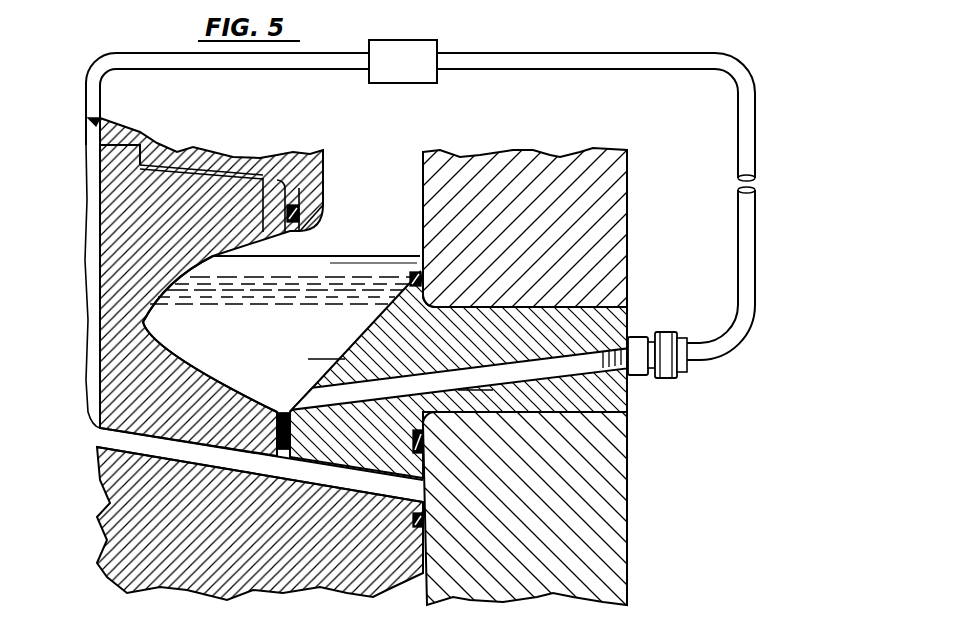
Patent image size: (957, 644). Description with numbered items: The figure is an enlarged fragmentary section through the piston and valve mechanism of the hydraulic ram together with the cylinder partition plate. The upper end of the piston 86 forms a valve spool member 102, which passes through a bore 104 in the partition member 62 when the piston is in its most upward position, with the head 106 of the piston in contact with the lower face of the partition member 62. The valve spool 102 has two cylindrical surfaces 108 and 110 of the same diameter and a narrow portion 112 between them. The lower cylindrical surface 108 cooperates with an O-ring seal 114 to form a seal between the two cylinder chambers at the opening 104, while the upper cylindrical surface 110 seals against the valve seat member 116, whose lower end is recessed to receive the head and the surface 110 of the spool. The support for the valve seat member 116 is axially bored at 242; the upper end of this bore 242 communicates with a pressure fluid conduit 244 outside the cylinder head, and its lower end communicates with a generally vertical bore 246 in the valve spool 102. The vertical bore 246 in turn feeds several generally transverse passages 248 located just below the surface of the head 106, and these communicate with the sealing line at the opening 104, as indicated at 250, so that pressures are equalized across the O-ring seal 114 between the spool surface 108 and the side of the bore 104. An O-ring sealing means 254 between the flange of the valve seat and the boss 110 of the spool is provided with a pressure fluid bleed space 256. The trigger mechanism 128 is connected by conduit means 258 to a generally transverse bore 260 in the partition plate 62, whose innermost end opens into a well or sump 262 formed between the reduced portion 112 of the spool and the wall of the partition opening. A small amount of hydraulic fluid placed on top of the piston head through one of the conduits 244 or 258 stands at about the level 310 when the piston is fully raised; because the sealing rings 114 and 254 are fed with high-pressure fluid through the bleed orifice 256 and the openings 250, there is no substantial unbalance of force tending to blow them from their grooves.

The partition member 62 is at (628, 407).
The piston 86 is at (347, 590).
The valve spool member 102 is at (113, 212).
The bore 104 is at (287, 412).
The head 106 is at (355, 467).
The cylindrical surface 108 is at (280, 445).
The cylindrical surface 110 is at (263, 180).
The narrow portion 112 is at (140, 322).
The O-ring seal 114 is at (278, 418).
The valve seat member 116 is at (301, 153).
The trigger mechanism 128 is at (436, 41).
The bore 242 is at (90, 117).
The pressure fluid conduit 244 is at (184, 71).
The vertical bore 246 is at (92, 281).
The transverse passages 248 is at (377, 483).
The openings 250 is at (287, 458).
The O-ring sealing means 254 is at (299, 220).
The pressure fluid bleed space 256 is at (235, 174).
The conduit means 258 is at (740, 217).
The transverse bore 260 is at (460, 378).
The well or sump 262 is at (458, 375).
The level of hydraulic fluid 310 is at (351, 275).